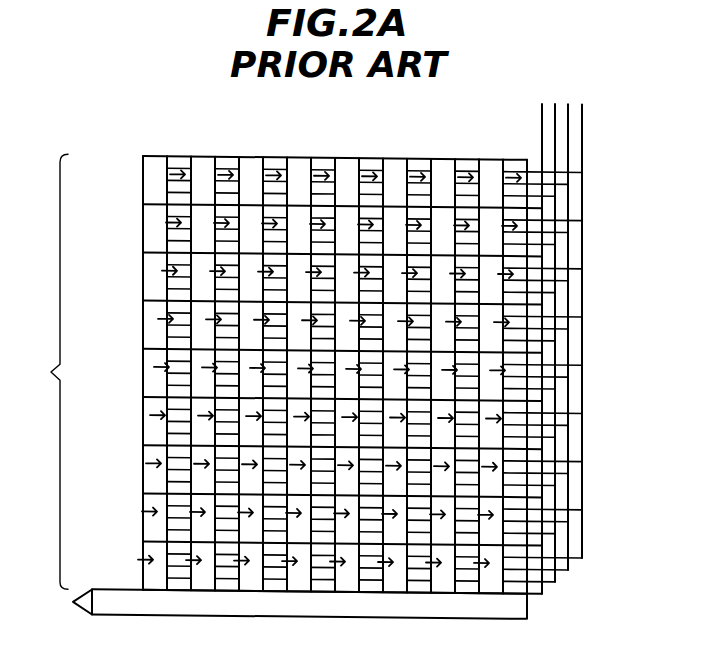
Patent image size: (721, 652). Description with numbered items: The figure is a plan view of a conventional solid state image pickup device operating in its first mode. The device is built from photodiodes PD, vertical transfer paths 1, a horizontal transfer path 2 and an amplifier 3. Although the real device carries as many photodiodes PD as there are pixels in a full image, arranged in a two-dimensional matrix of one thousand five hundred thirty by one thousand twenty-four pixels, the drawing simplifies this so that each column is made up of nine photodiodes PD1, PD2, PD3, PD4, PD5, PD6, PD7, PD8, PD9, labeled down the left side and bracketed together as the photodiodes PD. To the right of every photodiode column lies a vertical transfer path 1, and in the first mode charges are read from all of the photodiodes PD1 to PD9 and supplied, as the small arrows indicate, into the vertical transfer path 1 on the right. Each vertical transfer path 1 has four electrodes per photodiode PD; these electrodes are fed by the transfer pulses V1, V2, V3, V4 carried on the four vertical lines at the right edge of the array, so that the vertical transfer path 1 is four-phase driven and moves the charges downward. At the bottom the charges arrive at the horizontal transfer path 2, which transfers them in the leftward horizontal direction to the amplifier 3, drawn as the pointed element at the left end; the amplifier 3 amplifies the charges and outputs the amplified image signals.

The vertical transfer path 1 is at (176, 156).
The horizontal transfer path 2 is at (527, 605).
The amplifier 3 is at (82, 609).
The photodiode PD is at (257, 131).
The photodiode PD1 is at (143, 557).
The photodiode PD2 is at (143, 508).
The photodiode PD3 is at (143, 460).
The photodiode PD4 is at (143, 412).
The photodiode PD5 is at (143, 364).
The photodiode PD6 is at (143, 316).
The photodiode PD7 is at (143, 267).
The photodiode PD8 is at (143, 219).
The photodiode PD9 is at (143, 171).
The transfer pulse V1 is at (542, 113).
The transfer pulse V2 is at (555, 113).
The transfer pulse V3 is at (568, 132).
The transfer pulse V4 is at (582, 153).